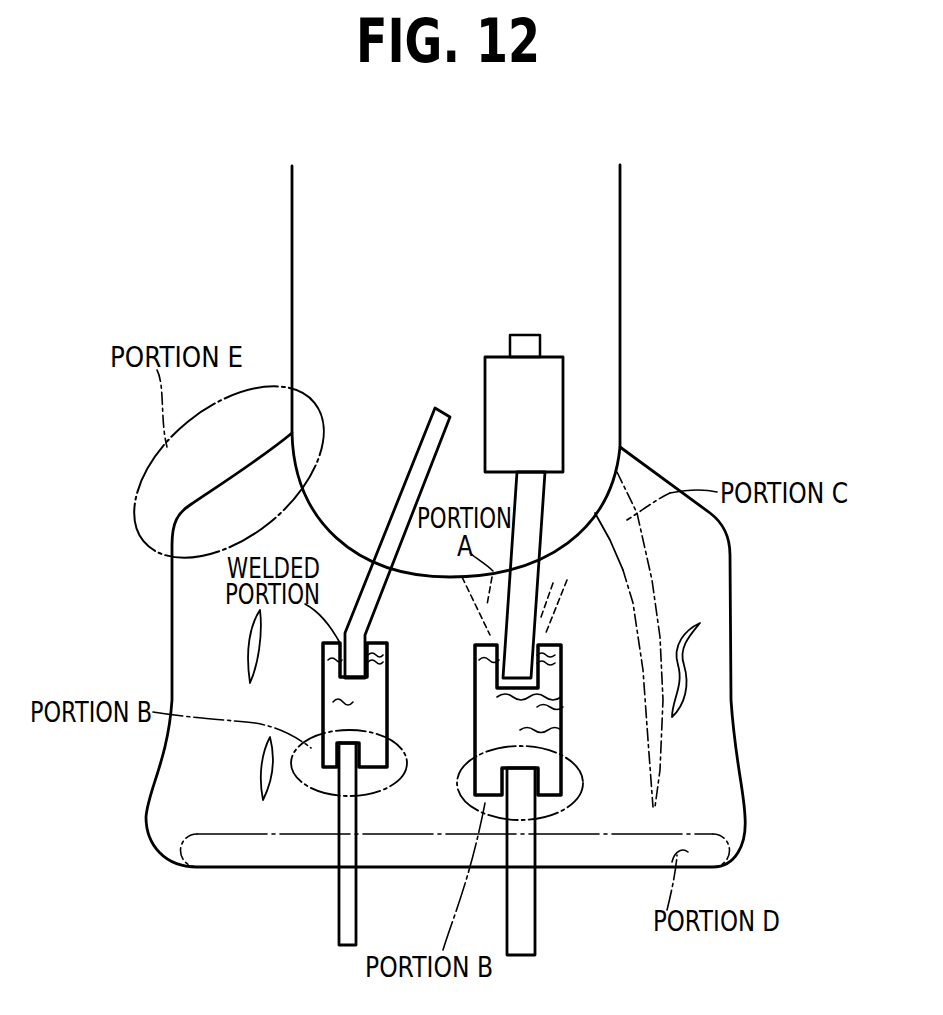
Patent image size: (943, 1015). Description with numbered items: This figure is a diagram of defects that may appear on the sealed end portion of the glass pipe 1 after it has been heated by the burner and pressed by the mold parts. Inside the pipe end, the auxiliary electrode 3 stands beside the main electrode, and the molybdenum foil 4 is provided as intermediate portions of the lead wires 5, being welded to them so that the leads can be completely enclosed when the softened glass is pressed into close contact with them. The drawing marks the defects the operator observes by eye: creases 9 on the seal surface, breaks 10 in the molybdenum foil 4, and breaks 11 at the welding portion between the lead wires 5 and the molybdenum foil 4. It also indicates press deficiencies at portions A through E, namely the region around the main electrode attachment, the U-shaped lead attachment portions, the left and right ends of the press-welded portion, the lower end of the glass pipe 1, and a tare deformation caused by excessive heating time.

The glass pipe 1 is at (621, 253).
The auxiliary electrode 3 is at (426, 428).
The molybdenum foil 4 is at (381, 718).
The lead wires 5 is at (352, 897).
The creases of a seal surface 9 is at (252, 660).
The breaks in the molybdenum foil 10 is at (340, 700).
The breaks in the welding portion 11 is at (378, 641).